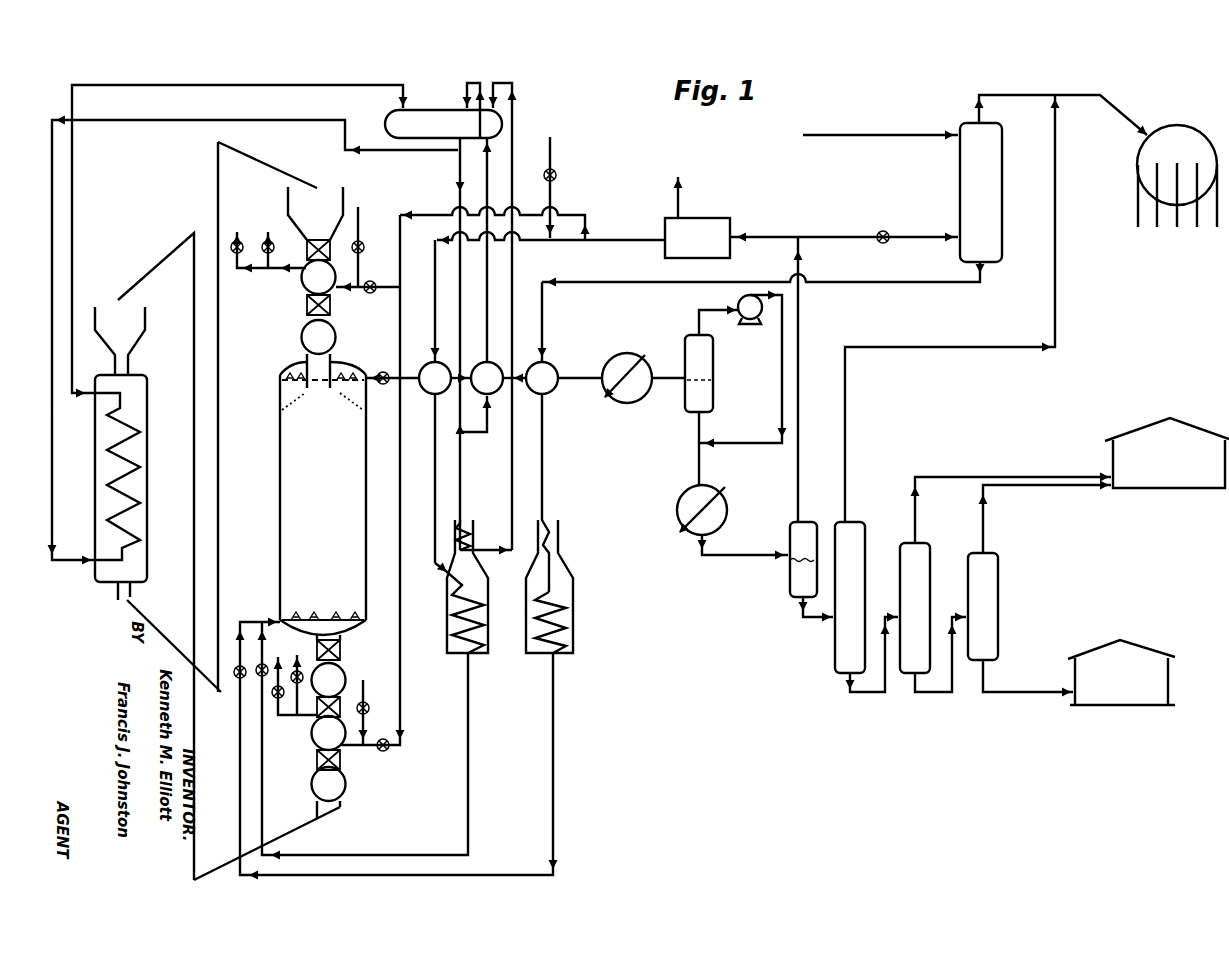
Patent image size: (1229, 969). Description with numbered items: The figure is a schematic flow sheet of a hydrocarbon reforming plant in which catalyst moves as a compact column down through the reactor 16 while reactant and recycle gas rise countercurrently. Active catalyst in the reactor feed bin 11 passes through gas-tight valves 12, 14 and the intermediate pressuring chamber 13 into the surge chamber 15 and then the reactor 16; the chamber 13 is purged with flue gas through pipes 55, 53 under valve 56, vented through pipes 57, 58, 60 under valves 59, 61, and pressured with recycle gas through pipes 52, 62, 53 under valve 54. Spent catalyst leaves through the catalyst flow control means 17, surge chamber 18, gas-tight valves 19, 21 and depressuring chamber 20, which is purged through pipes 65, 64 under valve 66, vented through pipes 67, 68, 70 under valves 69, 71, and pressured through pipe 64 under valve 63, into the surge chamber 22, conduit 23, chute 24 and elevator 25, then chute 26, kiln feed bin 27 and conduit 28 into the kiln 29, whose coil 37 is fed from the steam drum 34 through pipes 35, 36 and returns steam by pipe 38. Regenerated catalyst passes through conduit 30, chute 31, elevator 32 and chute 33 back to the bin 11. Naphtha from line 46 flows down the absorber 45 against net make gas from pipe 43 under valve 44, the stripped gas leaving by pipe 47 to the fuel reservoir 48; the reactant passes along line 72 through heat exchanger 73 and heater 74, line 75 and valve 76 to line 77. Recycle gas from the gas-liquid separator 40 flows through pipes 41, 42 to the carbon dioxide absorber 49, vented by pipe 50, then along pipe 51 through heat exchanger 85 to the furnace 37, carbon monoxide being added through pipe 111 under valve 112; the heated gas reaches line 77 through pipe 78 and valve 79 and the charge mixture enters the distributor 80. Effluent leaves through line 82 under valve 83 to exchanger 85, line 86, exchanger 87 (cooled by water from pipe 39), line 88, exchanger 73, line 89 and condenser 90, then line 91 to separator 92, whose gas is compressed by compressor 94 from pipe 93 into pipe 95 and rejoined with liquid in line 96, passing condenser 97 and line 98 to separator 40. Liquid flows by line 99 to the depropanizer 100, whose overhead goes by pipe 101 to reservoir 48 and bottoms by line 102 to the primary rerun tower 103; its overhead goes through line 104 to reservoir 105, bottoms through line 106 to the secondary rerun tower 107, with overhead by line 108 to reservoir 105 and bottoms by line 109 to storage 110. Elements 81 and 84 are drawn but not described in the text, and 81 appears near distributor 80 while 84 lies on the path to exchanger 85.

The reactor feed bin 11 is at (315, 213).
The gas-tight valve 12 is at (332, 250).
The intermediate pressuring chamber 13 is at (319, 277).
The gas-tight valve 14 is at (306, 305).
The surge chamber 15 is at (319, 354).
The reactor 16 is at (323, 498).
The catalyst flow control means 17 is at (342, 650).
The surge chamber 18 is at (329, 680).
The gas-tight valve 19 is at (312, 712).
The intermediate depressuring chamber 20 is at (329, 733).
The gas-tight valve 21 is at (342, 762).
The surge chamber 22 is at (329, 784).
The conduit 23 is at (318, 806).
The chute 24 is at (303, 828).
The catalyst transfer means 25 is at (192, 505).
The chute 26 is at (175, 248).
The kiln feed bin 27 is at (120, 341).
The conduit 28 is at (130, 362).
The kiln or regenerator 29 is at (147, 448).
The conduit 30 is at (132, 590).
The chute 31 is at (150, 612).
The catalyst transfer means 32 is at (219, 553).
The chute 33 is at (265, 160).
The steam drum 34 is at (443, 124).
The pipe 35 is at (455, 148).
The pipe 36 is at (375, 152).
The heater or furnace 37 is at (133, 418).
The pipe 38 is at (222, 88).
The pipe 39 is at (482, 158).
The gas-liquid separator 40 is at (803, 559).
The pipe 41 is at (800, 322).
The pipe 42 is at (770, 232).
The pipe 43 is at (846, 232).
The valve 44 is at (878, 244).
The absorber 45 is at (981, 192).
The line 46 is at (860, 140).
The pipe 47 is at (1008, 98).
The refinery gaseous fuel reservoir 48 is at (1177, 176).
The carbon dioxide absorber 49 is at (697, 238).
The pipe 50 is at (681, 198).
The pipe 51 is at (436, 260).
The pipe 52 is at (572, 214).
The pipe 53 is at (376, 294).
The valve 54 is at (374, 280).
The pipe 55 is at (360, 215).
The valve 56 is at (364, 244).
The pipe 57 is at (282, 270).
The pipe 58 is at (232, 270).
The valve 59 is at (242, 240).
The pipe 60 is at (266, 270).
The valve 61 is at (274, 247).
The pipe 62 is at (402, 228).
The valve 63 is at (388, 750).
The pipe 64 is at (402, 740).
The pipe 65 is at (366, 682).
The valve 66 is at (369, 705).
The pipe 67 is at (314, 712).
The pipe 68 is at (280, 718).
The valve 69 is at (273, 700).
The pipe 70 is at (292, 660).
The valve 71 is at (302, 690).
The line 72 is at (560, 278).
The heat exchanger 73 is at (564, 378).
The heater or furnace 74 is at (573, 583).
The line 75 is at (238, 800).
The valve 76 is at (236, 680).
The line 77 is at (250, 618).
The pipe 78 is at (260, 828).
The valve 79 is at (258, 680).
The distributor 80 is at (326, 612).
The distributor 81 is at (335, 395).
The line 82 is at (372, 390).
The valve 83 is at (385, 370).
The line 84 is at (430, 364).
The heat exchanger 85 is at (445, 378).
The line 86 is at (454, 364).
The heat exchanger 87 is at (498, 378).
The line 88 is at (528, 366).
The line 89 is at (580, 370).
The condenser 90 is at (628, 400).
The line 91 is at (674, 370).
The separator 92 is at (713, 362).
The pipe 93 is at (696, 318).
The compressor 94 is at (735, 302).
The pipe 95 is at (780, 404).
The line 96 is at (697, 464).
The condenser 97 is at (724, 503).
The line 98 is at (728, 565).
The line 99 is at (814, 622).
The depropanizer 100 is at (857, 540).
The pipe 101 is at (1060, 274).
The line 102 is at (862, 696).
The primary rerun tower 103 is at (900, 590).
The line 104 is at (950, 472).
The reservoir 105 is at (1167, 453).
The line 106 is at (928, 696).
The secondary rerun tower 107 is at (998, 626).
The line 108 is at (984, 524).
The line 109 is at (1010, 700).
The storage 110 is at (1121, 672).
The pipe 111 is at (556, 190).
The valve 112 is at (556, 173).